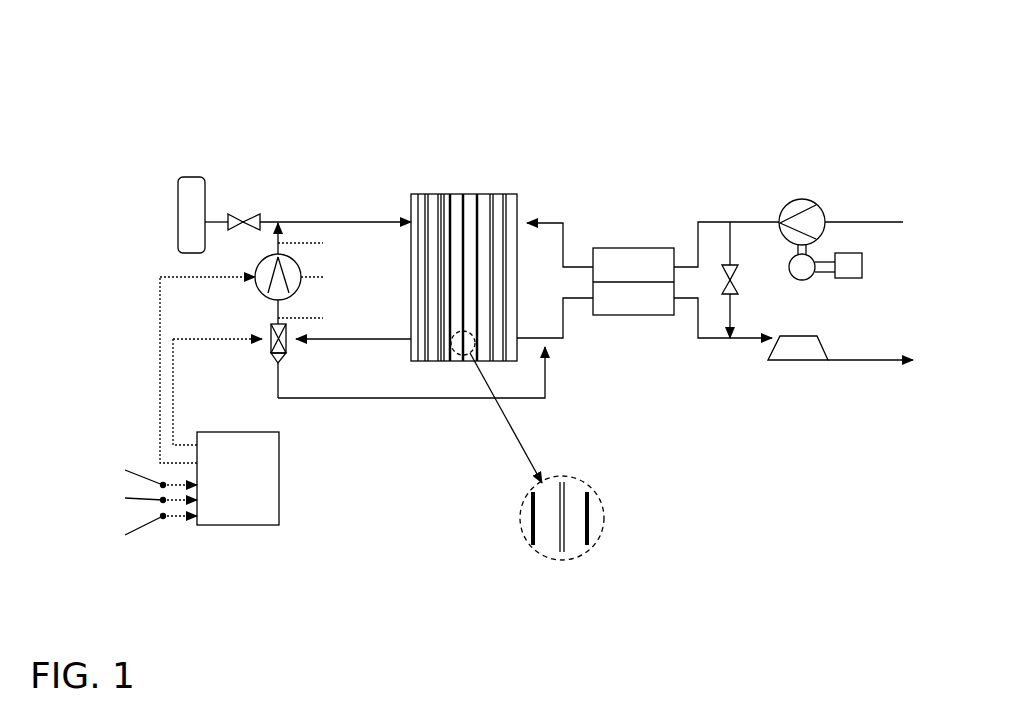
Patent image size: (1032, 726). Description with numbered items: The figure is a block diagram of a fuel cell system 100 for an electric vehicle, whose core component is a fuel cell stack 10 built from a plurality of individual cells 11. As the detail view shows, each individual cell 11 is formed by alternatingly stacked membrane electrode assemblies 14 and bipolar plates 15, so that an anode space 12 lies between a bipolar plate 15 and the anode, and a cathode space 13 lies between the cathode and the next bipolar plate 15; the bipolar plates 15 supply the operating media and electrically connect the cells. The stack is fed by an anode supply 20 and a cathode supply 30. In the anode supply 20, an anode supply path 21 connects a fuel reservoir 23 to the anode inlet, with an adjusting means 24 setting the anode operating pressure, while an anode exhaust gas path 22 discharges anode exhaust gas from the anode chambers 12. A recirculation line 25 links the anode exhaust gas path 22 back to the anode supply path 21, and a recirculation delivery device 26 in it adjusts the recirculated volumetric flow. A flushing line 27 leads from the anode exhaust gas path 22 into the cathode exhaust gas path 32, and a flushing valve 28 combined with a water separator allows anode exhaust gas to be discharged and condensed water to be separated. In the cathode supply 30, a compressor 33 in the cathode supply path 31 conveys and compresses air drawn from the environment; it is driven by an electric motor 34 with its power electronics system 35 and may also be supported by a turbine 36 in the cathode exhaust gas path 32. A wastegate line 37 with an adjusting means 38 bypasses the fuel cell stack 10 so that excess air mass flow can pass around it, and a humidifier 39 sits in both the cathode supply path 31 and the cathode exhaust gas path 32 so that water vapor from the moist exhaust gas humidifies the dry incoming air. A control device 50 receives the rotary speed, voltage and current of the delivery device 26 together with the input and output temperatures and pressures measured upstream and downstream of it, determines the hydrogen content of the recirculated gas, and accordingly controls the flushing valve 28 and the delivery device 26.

The fuel cell system 100 is at (624, 86).
The fuel cell stack 10 is at (493, 180).
The individual cell 11 is at (418, 207).
The anode space 12 is at (548, 541).
The cathode space 13 is at (576, 539).
The membrane electrode assembly 14 is at (562, 544).
The bipolar plate 15 is at (534, 528).
The anode supply 20 is at (225, 130).
The anode supply path 21 is at (310, 222).
The anode exhaust gas path 22 is at (372, 339).
The fuel reservoir 23 is at (191, 190).
The adjusting means 24 is at (241, 219).
The recirculation line 25 is at (278, 307).
The recirculation delivery device 26 is at (270, 286).
The flushing line 27 is at (420, 398).
The flushing valve 28 is at (272, 348).
The cathode supply 30 is at (654, 171).
The cathode supply path 31 is at (855, 222).
The cathode exhaust gas path 32 is at (840, 360).
The compressor 33 is at (804, 203).
The electric motor 34 is at (802, 267).
The power electronics system 35 is at (850, 265).
The turbine 36 is at (800, 349).
The wastegate line 37 is at (728, 326).
The adjusting means 38 is at (733, 290).
The humidifier 39 is at (640, 302).
The control device 50 is at (258, 490).